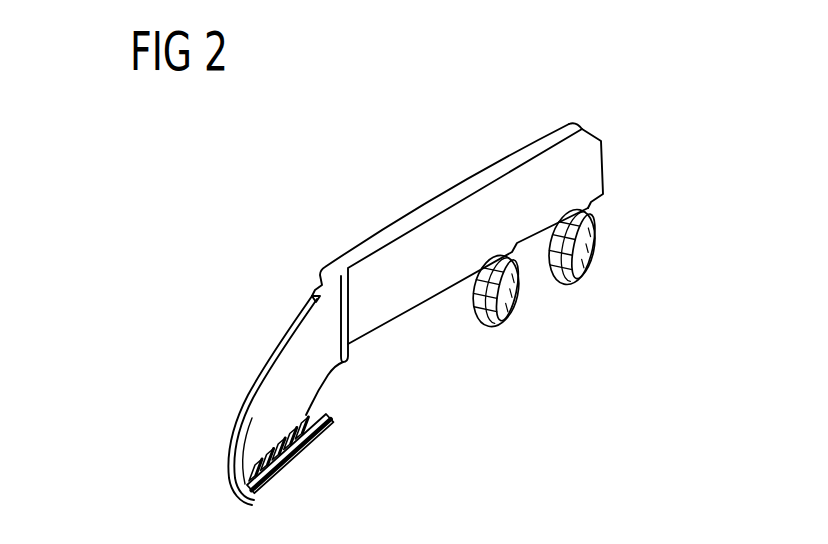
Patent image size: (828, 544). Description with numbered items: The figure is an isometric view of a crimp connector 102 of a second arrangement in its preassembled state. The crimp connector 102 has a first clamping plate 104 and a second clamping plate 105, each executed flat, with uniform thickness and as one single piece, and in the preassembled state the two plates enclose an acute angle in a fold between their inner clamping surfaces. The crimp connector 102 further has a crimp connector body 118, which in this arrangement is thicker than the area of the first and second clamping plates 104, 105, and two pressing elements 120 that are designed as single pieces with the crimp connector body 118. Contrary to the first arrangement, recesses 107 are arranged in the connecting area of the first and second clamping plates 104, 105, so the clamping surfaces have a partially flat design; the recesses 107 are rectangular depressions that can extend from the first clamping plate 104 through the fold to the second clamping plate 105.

The crimp connector 102 is at (338, 142).
The crimp connector body 118 is at (547, 177).
The recesses 107 is at (310, 407).
The first clamping plate 104 is at (307, 457).
The second clamping plate 105 is at (247, 467).
The pressing elements 120 is at (563, 283).